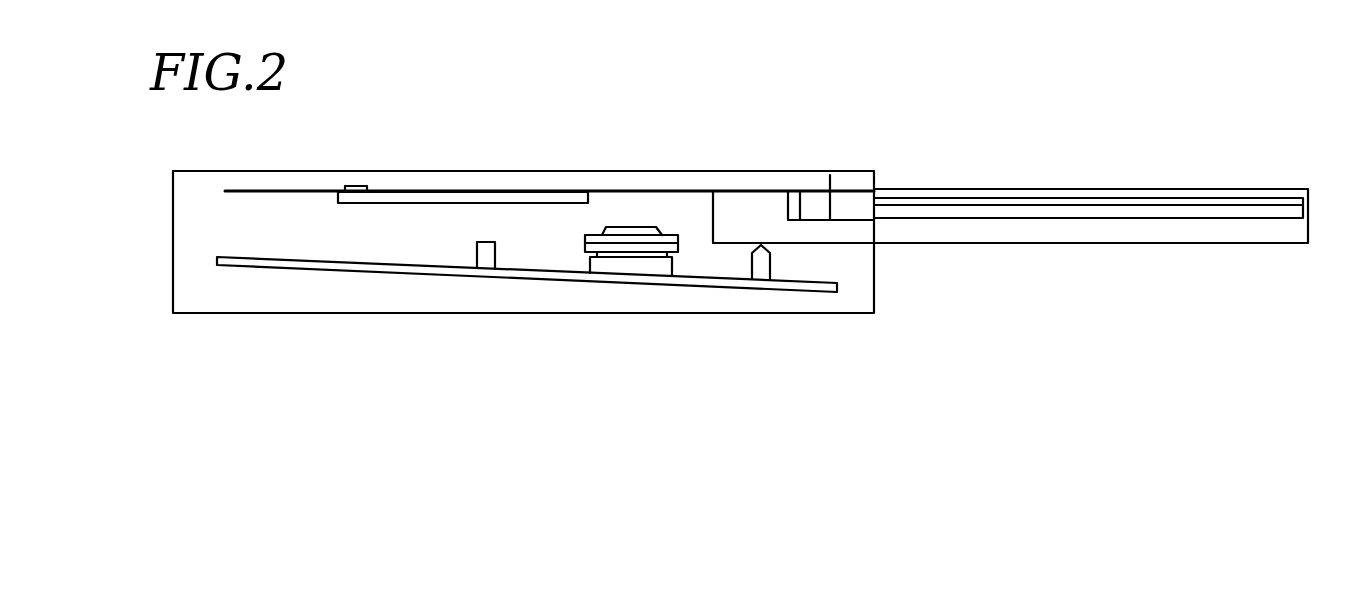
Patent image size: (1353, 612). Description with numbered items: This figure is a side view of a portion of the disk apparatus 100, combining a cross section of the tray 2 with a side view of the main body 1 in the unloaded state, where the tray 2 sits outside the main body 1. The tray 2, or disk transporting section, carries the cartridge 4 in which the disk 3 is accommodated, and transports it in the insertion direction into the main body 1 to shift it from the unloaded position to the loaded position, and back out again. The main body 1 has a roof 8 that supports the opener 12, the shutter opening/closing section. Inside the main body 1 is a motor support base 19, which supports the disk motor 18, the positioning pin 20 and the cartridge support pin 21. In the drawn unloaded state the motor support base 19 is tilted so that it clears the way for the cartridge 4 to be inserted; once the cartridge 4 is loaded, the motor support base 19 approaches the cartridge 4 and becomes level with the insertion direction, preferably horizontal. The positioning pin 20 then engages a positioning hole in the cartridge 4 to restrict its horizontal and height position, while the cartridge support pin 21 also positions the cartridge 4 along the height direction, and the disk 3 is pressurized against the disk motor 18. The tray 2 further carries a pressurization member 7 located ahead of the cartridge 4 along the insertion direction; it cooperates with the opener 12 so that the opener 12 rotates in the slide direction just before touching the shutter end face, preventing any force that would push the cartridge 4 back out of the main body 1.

The main body 1 is at (866, 168).
The tray 2 is at (1132, 232).
The disk 3 is at (1078, 201).
The cartridge 4 is at (1200, 197).
The pressurization member 7 is at (793, 206).
The roof 8 is at (274, 191).
The opener 12 is at (486, 194).
The disk motor 18 is at (627, 266).
The motor support base 19 is at (550, 281).
The positioning pin 20 is at (760, 270).
The cartridge support pin 21 is at (485, 261).
The disk apparatus 100 is at (1232, 369).